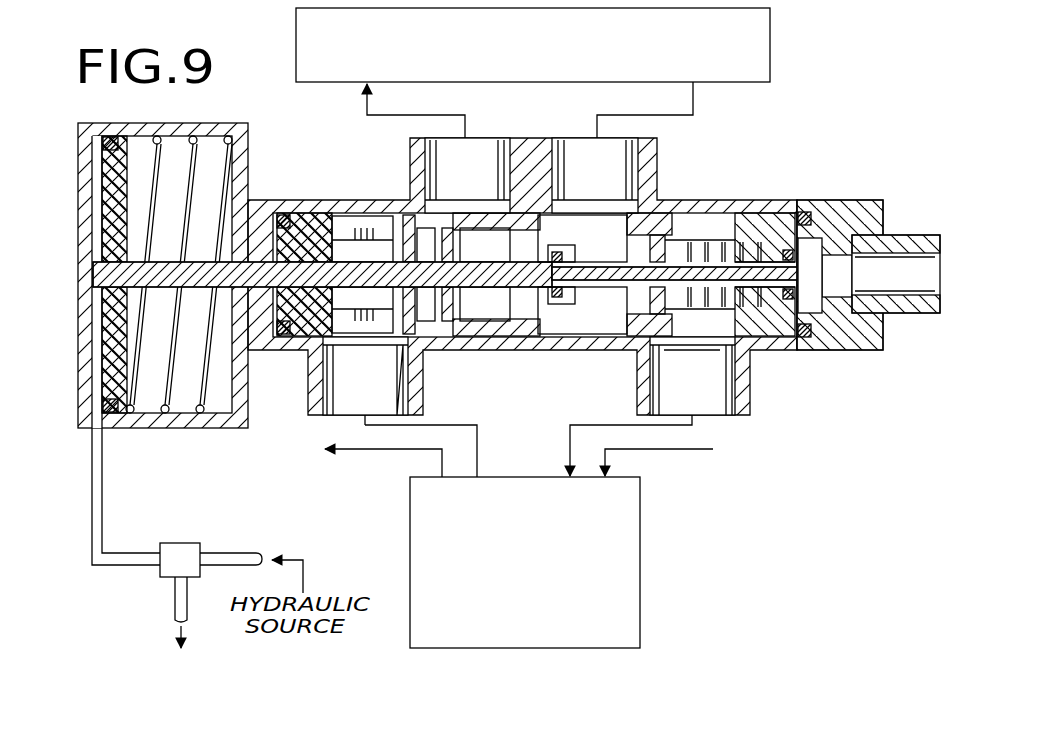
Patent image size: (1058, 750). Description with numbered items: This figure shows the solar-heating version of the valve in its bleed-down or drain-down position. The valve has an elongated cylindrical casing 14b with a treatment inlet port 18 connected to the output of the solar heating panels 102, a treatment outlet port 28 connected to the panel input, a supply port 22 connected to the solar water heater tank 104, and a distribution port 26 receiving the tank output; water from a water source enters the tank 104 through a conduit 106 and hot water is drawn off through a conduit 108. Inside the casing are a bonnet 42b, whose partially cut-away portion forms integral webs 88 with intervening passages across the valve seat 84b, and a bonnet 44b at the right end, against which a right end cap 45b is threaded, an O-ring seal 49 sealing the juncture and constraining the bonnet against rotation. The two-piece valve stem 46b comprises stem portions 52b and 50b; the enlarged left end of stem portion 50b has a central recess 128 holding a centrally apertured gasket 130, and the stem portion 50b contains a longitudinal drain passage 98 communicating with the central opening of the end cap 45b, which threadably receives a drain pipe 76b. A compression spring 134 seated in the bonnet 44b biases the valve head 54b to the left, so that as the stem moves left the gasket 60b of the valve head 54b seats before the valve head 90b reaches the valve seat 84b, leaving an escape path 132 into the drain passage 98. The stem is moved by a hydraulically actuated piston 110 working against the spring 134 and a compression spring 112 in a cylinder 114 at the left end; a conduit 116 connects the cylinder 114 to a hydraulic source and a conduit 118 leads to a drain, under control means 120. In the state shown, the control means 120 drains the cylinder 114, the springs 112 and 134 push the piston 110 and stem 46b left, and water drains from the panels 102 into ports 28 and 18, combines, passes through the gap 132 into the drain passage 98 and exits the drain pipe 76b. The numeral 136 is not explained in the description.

The valve casing 14b is at (340, 200).
The treatment inlet port 18 is at (647, 158).
The supply port 22 is at (653, 405).
The distribution port 26 is at (415, 400).
The treatment outlet port 28 is at (545, 256).
The bonnet 42b is at (318, 214).
The bonnet 44b is at (775, 213).
The right end cap 45b is at (880, 205).
The valve stem 46b is at (470, 265).
The O-ring seal 49 is at (812, 210).
The stem portion 50b is at (600, 258).
The stem portion 52b is at (310, 285).
The valve head 54b is at (700, 350).
The gasket 60b is at (660, 225).
The drain pipe 76b is at (920, 240).
The valve seat 84b is at (410, 333).
The integral webs 88 is at (363, 222).
The valve head 90b is at (420, 320).
The drain passage 98 is at (685, 312).
The solar heating panels 102 is at (772, 60).
The solar water heater tank 104 is at (642, 578).
The conduit 106 is at (700, 452).
The conduit 108 is at (367, 451).
The piston 110 is at (133, 140).
The compression spring 112 is at (207, 142).
The cylinder 114 is at (150, 430).
The conduit 116 is at (97, 507).
The conduit 118 is at (175, 601).
The control means 120 is at (185, 550).
The central recess 128 is at (548, 286).
The gasket 130 is at (575, 288).
The escape path 132 is at (493, 288).
The compression spring 134 is at (703, 215).
The spring seat 136 is at (760, 312).